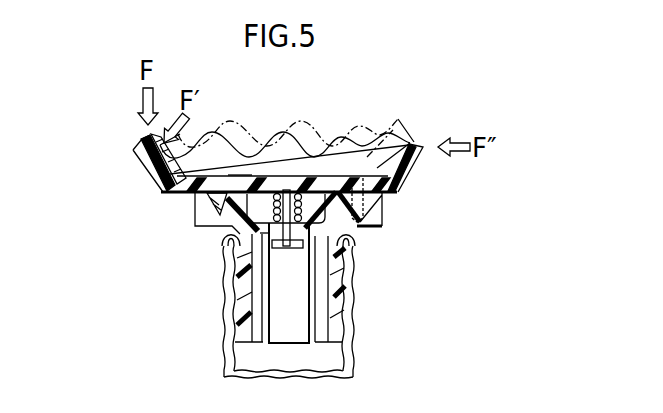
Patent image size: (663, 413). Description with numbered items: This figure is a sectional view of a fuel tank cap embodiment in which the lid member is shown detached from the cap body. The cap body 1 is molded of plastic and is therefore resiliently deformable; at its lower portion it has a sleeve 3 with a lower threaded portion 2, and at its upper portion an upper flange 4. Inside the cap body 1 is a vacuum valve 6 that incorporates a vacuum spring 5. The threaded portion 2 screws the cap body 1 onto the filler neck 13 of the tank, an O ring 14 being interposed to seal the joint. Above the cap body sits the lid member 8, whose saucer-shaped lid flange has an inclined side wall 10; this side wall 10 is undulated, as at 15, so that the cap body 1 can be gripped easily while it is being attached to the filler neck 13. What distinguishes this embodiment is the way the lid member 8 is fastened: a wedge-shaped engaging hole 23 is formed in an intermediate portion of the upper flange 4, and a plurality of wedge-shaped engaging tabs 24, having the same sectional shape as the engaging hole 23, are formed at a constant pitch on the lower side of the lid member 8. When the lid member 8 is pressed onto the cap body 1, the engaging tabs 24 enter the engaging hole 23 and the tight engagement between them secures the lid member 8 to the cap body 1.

The cap body 1 is at (371, 232).
The threaded portion 2 is at (263, 305).
The sleeve 3 is at (330, 287).
The upper flange 4 is at (197, 213).
The vacuum spring 5 is at (303, 241).
The vacuum valve 6 is at (282, 249).
The lid member 8 is at (241, 171).
The side wall 10 is at (150, 176).
The filler neck 13 is at (337, 357).
The O ring 14 is at (231, 236).
The undulation 15 is at (301, 158).
The engaging hole 23 is at (382, 213).
The engaging tabs 24 is at (350, 200).